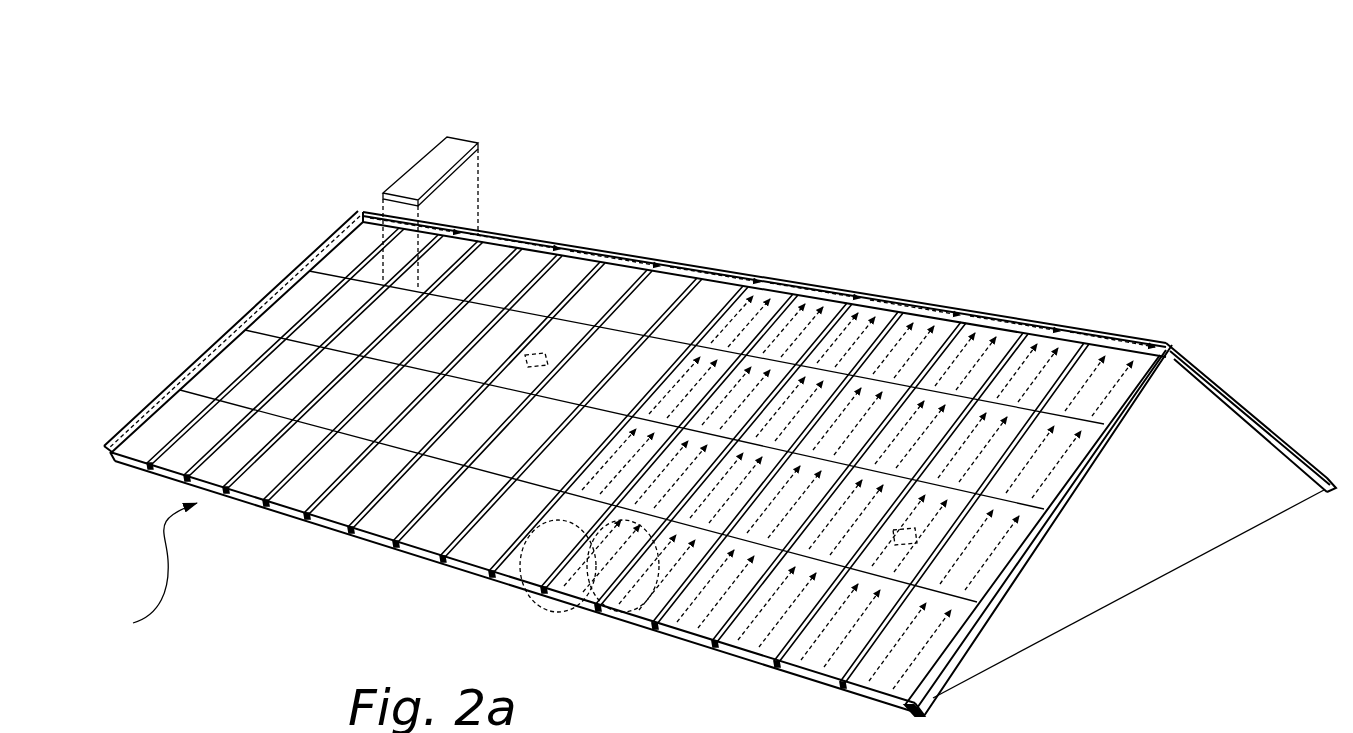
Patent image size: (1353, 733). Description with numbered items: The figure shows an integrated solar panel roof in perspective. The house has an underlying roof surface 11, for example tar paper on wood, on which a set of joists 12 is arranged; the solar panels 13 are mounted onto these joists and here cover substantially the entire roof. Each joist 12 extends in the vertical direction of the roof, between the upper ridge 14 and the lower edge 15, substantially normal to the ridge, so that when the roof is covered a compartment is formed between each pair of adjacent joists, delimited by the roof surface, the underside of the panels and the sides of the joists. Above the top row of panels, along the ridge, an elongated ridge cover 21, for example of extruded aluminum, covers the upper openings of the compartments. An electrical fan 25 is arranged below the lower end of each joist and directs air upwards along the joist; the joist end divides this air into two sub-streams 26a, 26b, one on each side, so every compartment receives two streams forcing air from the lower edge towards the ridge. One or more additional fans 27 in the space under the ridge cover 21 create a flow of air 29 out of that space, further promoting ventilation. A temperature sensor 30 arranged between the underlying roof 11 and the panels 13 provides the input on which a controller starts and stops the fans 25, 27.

The underlying roof surface 11 is at (353, 262).
The joist 12 is at (303, 317).
The solar panel 13 is at (430, 173).
The upper ridge 14 is at (730, 256).
The lower edge 15 is at (147, 572).
The ridge cover 21 is at (1060, 322).
The electrical fan 25 is at (592, 607).
The sub-stream 26a is at (530, 548).
The sub-stream 26b is at (630, 592).
The additional fan 27 is at (1172, 346).
The flow of air 29 is at (837, 289).
The temperature sensor 30 is at (535, 353).